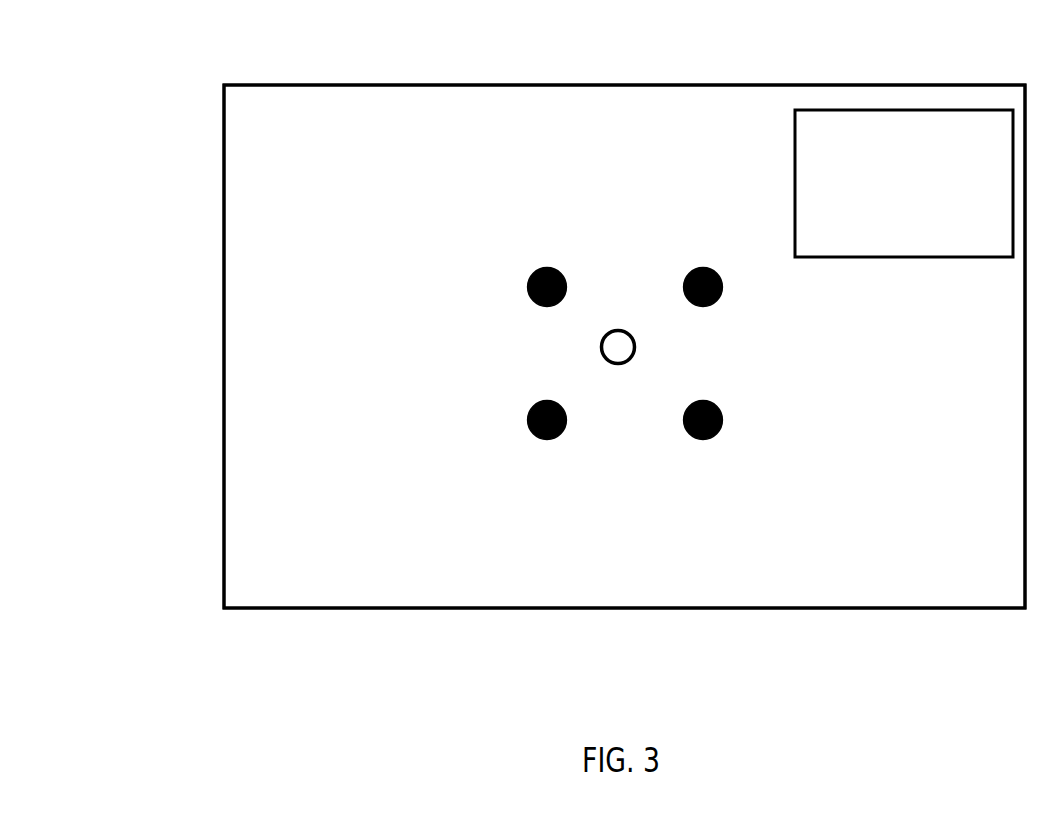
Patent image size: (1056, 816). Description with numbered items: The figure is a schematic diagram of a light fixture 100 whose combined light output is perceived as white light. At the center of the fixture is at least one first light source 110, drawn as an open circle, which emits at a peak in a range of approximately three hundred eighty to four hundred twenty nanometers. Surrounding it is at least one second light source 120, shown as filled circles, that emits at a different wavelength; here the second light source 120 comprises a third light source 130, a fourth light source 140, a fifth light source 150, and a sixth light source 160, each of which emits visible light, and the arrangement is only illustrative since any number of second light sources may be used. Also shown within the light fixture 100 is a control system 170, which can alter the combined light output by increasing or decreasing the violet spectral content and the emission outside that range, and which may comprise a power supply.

The light fixture 100 is at (137, 45).
The first light source 110 is at (618, 328).
The second light source 120 is at (450, 228).
The third light source 130 is at (527, 287).
The fourth light source 140 is at (527, 420).
The fifth light source 150 is at (723, 287).
The sixth light source 160 is at (723, 420).
The control system 170 is at (934, 194).